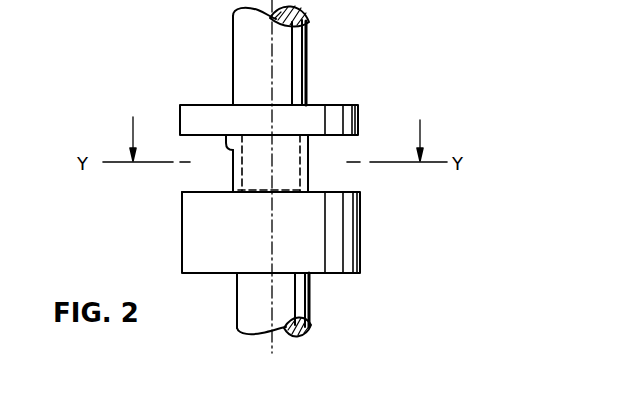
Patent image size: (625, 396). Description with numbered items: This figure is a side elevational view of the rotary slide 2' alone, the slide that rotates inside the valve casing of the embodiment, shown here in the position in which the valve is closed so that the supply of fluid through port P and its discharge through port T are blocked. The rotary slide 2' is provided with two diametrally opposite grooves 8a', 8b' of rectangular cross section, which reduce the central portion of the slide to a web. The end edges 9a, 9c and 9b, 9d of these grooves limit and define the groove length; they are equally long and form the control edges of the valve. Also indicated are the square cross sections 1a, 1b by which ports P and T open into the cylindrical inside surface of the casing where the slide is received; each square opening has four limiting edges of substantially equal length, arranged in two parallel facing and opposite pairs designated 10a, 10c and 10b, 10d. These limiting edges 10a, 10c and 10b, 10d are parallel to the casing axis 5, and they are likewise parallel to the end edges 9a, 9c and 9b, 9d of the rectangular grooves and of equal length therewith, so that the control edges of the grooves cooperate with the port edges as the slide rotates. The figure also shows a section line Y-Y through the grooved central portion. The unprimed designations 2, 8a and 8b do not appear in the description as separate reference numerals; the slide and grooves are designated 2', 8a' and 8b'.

The square cross section 1a is at (320, 171).
The square cross section 1b is at (307, 138).
The rotary slide 2' is at (292, 232).
The flange hub 2 is at (292, 232).
The casing axis 5 is at (275, 344).
The groove 8a' is at (185, 214).
The lower annular recess 8a is at (185, 214).
The groove 8b' is at (321, 145).
The upper annular recess 8b is at (321, 145).
The end edge 9a is at (168, 175).
The end edge 9b is at (380, 166).
The end edge 9c is at (233, 174).
The end edge 9d is at (308, 181).
The limiting edge 10a is at (228, 91).
The limiting edge 10b is at (419, 133).
The limiting edge 10c is at (224, 134).
The limiting edge 10d is at (312, 161).